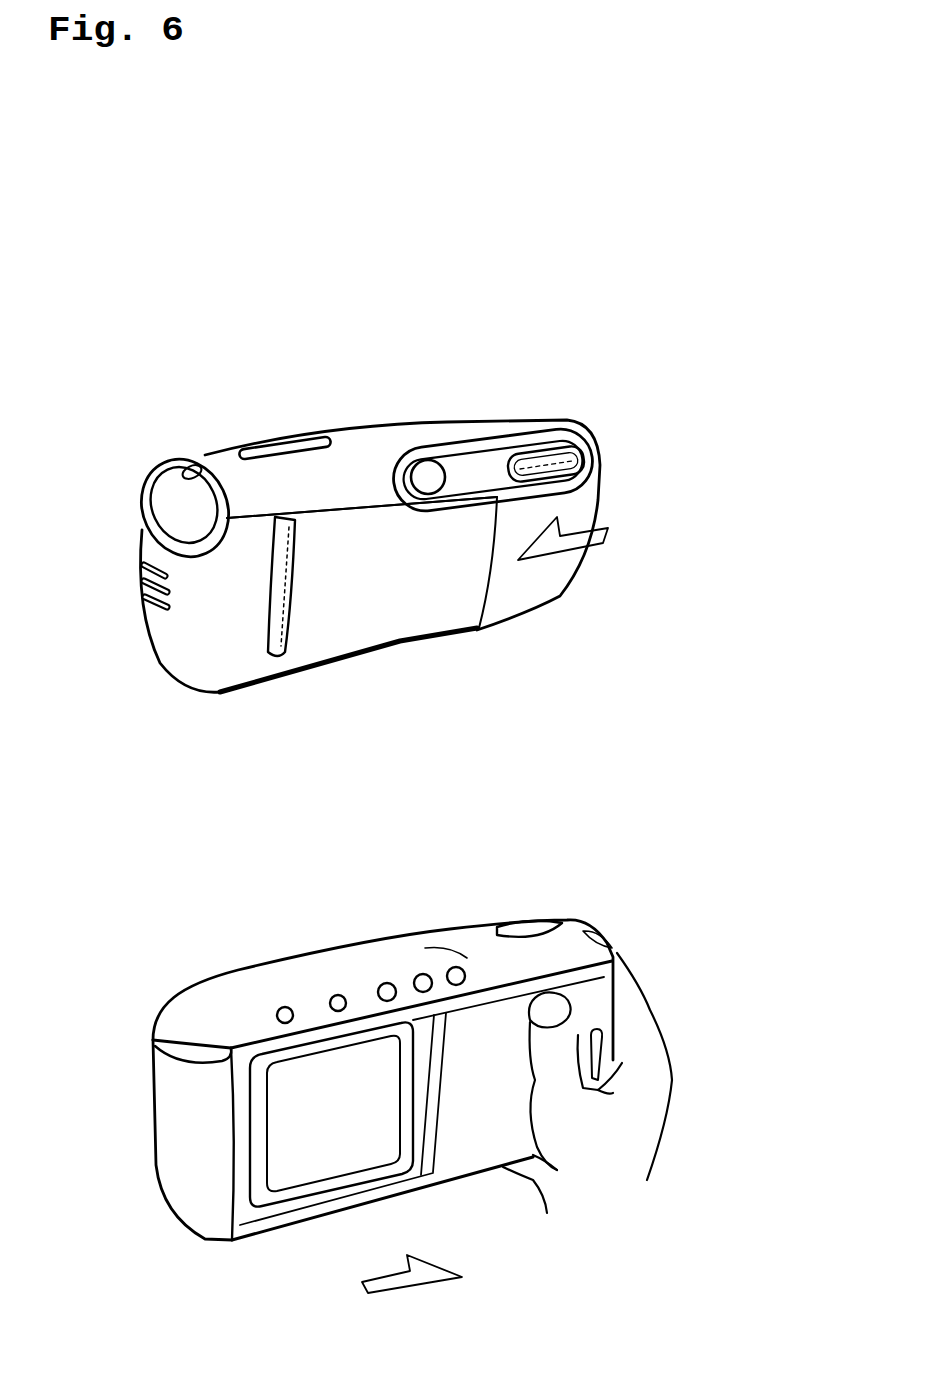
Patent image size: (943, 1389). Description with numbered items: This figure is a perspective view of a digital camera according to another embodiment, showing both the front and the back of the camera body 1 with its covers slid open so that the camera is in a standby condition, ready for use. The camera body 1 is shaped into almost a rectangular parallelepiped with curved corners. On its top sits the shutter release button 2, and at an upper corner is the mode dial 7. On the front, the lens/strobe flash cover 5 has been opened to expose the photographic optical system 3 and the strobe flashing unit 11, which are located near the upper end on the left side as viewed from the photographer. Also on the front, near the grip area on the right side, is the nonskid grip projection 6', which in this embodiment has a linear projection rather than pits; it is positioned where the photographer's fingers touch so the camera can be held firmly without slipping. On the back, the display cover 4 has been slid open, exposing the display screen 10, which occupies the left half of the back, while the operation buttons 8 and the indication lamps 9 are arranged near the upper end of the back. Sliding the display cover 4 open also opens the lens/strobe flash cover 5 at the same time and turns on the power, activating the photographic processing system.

The camera body 1 is at (600, 445).
The shutter release button 2 is at (530, 930).
The photographic optical system 3 is at (429, 470).
The display cover 4 is at (580, 1000).
The lens/strobe flash cover 5 is at (368, 540).
The nonskid grip projection 6' is at (196, 644).
The mode dial 7 is at (182, 488).
The operation buttons 8 is at (370, 970).
The indication lamps 9 is at (343, 977).
The display screen 10 is at (293, 1170).
The strobe flashing unit 11 is at (550, 463).